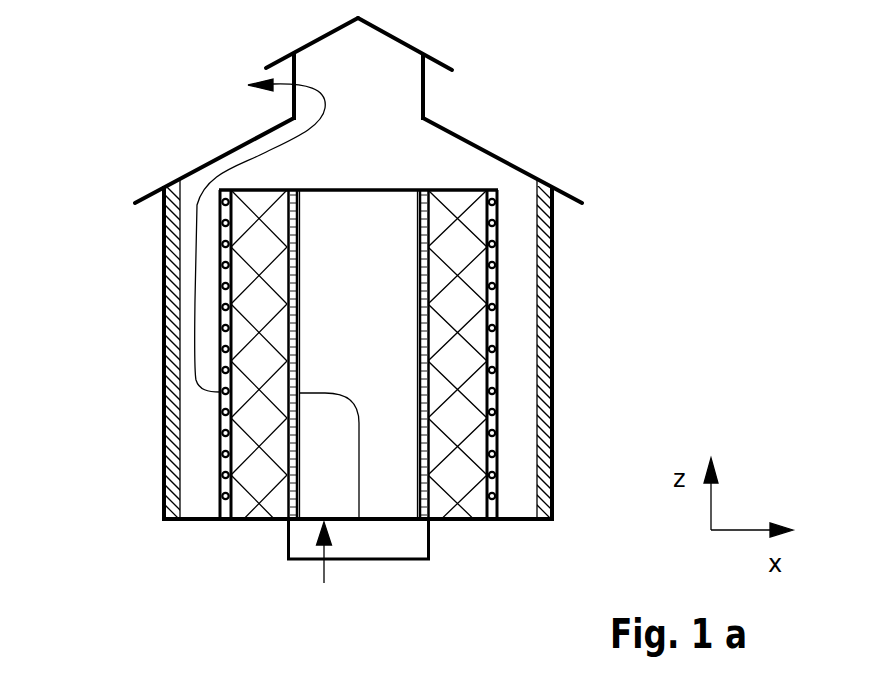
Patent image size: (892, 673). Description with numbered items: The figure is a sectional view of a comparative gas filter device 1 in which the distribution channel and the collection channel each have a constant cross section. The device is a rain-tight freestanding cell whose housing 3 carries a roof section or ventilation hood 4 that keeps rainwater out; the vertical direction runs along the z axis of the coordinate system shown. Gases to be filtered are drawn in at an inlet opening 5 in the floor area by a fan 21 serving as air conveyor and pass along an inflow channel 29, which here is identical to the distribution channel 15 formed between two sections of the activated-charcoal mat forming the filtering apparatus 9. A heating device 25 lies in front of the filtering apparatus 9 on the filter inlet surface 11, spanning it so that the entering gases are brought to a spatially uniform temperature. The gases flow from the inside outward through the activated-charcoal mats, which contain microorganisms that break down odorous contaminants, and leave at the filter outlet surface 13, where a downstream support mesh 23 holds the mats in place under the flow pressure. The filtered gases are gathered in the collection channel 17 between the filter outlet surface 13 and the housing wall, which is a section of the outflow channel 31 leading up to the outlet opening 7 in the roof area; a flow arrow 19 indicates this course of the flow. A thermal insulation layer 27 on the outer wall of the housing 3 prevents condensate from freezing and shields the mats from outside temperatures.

The gas filter device 1 is at (363, 326).
The housing 3 is at (163, 264).
The ventilation hood 4 is at (400, 38).
The inlet opening 5 is at (323, 570).
The outlet opening 7 is at (294, 72).
The filtering apparatus 9 is at (264, 487).
The filter inlet surface 11 is at (299, 287).
The filter outlet surface 13 is at (219, 422).
The distribution channel 15 is at (428, 503).
The collection channel 17 is at (185, 303).
The flow arrow 19 is at (325, 96).
The fan 21 is at (365, 542).
The support mesh 23 is at (223, 521).
The heating device 25 is at (295, 521).
The thermal insulation layer 27 is at (554, 377).
The inflow channel 29 is at (329, 455).
The outflow channel 31 is at (287, 141).